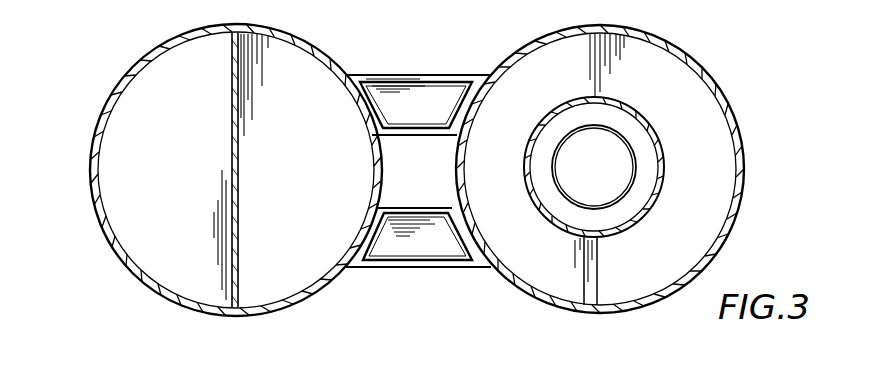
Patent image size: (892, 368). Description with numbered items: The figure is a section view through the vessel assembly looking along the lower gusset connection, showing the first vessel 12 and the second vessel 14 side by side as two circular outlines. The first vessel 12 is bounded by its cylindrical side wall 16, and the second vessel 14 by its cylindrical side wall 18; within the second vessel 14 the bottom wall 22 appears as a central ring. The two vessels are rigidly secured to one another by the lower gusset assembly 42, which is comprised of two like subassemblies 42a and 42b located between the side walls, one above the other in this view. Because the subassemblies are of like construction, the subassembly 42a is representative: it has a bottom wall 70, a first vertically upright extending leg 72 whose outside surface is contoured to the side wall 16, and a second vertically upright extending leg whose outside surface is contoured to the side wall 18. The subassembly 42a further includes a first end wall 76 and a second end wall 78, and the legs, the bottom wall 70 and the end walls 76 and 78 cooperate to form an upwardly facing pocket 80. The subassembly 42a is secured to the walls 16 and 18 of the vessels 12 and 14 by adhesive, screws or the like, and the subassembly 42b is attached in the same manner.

The first vessel 12 is at (209, 161).
The second vessel 14 is at (619, 167).
The cylindrical side wall 16 is at (158, 46).
The cylindrical side wall 18 is at (690, 52).
The bottom wall 22 is at (713, 195).
The lower gusset assembly 42 is at (417, 163).
The gusset subassembly 42a is at (426, 83).
The gusset subassembly 42b is at (410, 276).
The bottom wall 70 is at (428, 108).
The first vertically upright extending leg 72 is at (178, 178).
The first end wall 76 is at (418, 137).
The second end wall 78 is at (450, 78).
The upwardly facing pocket 80 is at (389, 90).